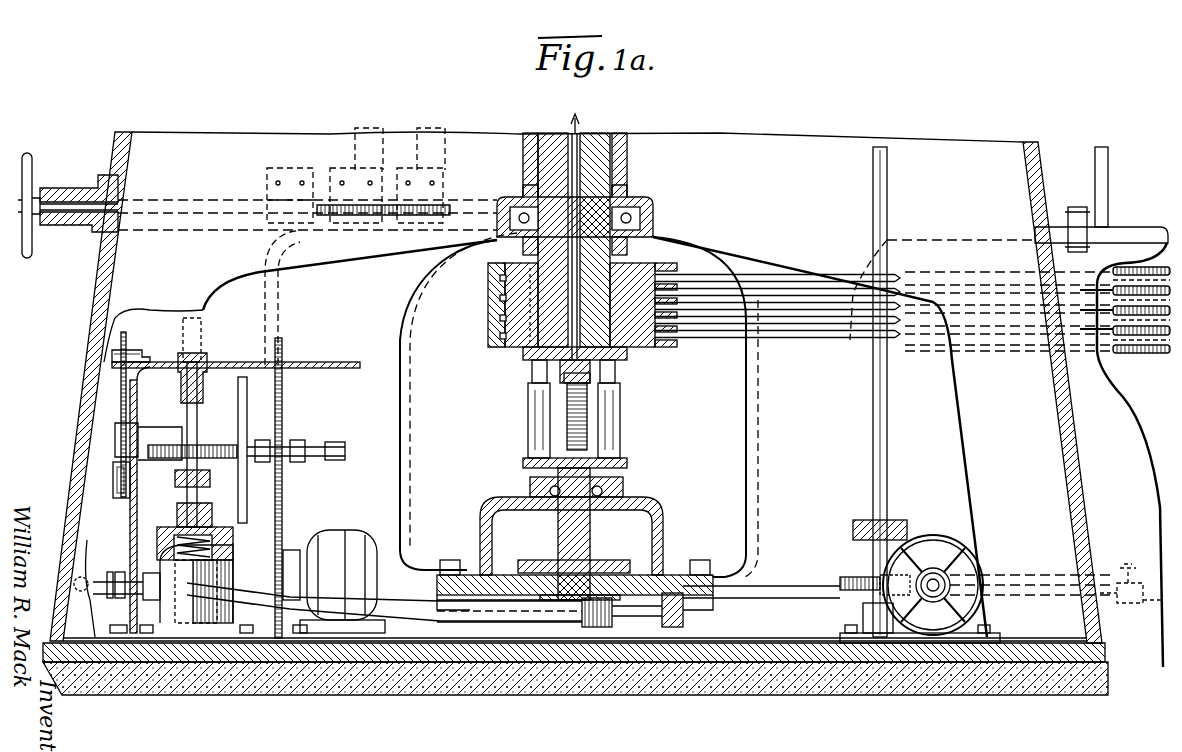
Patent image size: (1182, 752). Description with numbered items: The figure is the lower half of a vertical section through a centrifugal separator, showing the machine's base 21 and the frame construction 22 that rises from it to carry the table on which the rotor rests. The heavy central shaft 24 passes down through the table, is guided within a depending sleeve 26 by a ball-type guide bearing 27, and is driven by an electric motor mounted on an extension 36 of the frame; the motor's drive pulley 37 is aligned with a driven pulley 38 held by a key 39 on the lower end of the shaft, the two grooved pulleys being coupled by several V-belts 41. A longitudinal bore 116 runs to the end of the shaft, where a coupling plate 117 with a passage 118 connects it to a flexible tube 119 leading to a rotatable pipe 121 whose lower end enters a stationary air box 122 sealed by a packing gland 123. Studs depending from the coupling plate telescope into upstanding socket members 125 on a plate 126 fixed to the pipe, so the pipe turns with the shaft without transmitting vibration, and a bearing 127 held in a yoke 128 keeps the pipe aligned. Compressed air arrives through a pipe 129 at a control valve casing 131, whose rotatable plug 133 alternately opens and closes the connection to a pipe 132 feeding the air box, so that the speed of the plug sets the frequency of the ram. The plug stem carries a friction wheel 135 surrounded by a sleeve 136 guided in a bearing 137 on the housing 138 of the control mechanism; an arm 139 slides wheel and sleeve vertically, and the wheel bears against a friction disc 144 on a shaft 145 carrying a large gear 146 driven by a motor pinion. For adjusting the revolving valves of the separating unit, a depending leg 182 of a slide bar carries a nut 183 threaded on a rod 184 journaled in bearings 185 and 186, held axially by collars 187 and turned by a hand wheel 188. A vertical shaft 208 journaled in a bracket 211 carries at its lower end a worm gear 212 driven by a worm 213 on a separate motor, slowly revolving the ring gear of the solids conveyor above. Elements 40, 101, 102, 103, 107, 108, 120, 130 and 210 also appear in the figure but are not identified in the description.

The base 21 is at (1148, 668).
The frame construction 22 is at (1030, 163).
The central shaft 24 is at (595, 140).
The sleeve 26 is at (627, 155).
The guide bearing 27 is at (653, 210).
The extension 36 is at (1122, 230).
The drive pulley 37 is at (1148, 352).
The driven pulley 38 is at (510, 328).
The key 39 is at (522, 343).
The pipe header 40 is at (755, 305).
The V-belts 41 is at (488, 320).
The rod 101 is at (121, 410).
The bracket 102 is at (112, 356).
The switch box 103 is at (113, 490).
The bracket 107 is at (288, 550).
The motor 108 is at (338, 540).
The longitudinal bore 116 is at (558, 232).
The coupling plate 117 is at (627, 355).
The passage 118 is at (590, 370).
The flexible tube 119 is at (587, 412).
The guide rods 120 is at (535, 378).
The rotatable pipe 121 is at (590, 536).
The air box 122 is at (612, 609).
The packing gland 123 is at (550, 565).
The socket members 125 is at (535, 432).
The plate 126 is at (627, 466).
The bearing 127 is at (532, 490).
The yoke 128 is at (663, 528).
The pipe 129 is at (118, 598).
The coupling 130 is at (175, 485).
The control valve casing 131 is at (157, 552).
The pipe 132 is at (512, 625).
The rotatable plug 133 is at (225, 552).
The friction wheel 135 is at (222, 445).
The sleeve 136 is at (207, 362).
The bearing 137 is at (186, 355).
The housing 138 is at (236, 355).
The arm 139 is at (165, 445).
The friction disc 144 is at (240, 415).
The shaft 145 is at (322, 446).
The large gear 146 is at (247, 394).
The depending leg 182 is at (385, 130).
The nut 183 is at (444, 195).
The rod 184 is at (216, 200).
The bearing 185 is at (70, 188).
The bearing 186 is at (290, 168).
The collars 187 is at (322, 168).
The hand wheel 188 is at (30, 166).
The shaft 208 is at (873, 189).
The handwheel 210 is at (938, 540).
The bracket 211 is at (863, 616).
The worm gear 212 is at (850, 575).
The worm 213 is at (975, 612).